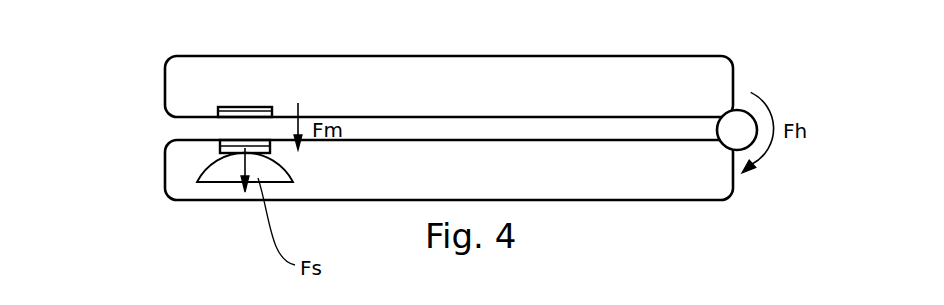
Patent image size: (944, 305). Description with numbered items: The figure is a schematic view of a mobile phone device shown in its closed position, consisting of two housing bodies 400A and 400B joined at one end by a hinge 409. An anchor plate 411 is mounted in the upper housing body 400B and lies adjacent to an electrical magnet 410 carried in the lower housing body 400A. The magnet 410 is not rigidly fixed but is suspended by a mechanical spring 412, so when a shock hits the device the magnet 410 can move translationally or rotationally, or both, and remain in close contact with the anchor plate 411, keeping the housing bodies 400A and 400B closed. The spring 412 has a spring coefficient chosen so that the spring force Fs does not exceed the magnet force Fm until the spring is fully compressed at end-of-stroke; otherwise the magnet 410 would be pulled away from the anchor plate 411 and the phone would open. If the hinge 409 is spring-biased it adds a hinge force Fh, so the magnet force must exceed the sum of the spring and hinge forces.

The housing body 400A is at (163, 183).
The housing body 400B is at (165, 72).
The hinge 409 is at (738, 110).
The electrical magnet 410 is at (220, 146).
The anchor plate 411 is at (247, 107).
The mechanical spring 412 is at (210, 193).